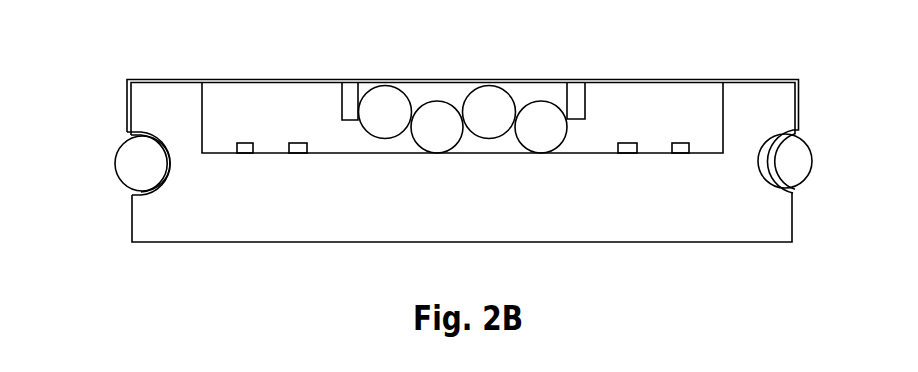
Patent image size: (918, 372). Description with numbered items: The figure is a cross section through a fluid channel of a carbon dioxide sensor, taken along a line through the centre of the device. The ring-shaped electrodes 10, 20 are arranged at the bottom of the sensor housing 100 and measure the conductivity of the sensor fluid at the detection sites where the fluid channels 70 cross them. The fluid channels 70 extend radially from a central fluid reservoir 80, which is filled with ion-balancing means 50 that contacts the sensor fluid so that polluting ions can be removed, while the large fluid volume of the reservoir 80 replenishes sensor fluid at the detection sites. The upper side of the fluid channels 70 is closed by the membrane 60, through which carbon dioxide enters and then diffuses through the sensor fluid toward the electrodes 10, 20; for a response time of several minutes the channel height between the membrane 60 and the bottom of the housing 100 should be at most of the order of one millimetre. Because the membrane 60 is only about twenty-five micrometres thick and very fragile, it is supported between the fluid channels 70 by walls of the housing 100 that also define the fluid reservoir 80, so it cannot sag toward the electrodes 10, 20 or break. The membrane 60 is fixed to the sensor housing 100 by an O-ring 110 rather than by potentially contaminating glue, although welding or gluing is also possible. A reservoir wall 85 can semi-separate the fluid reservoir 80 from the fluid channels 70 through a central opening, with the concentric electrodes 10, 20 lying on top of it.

The electrode 10 is at (297, 153).
The electrode 20 is at (245, 153).
The ion-balancing means 50 is at (482, 100).
The membrane 60 is at (447, 82).
The fluid channel 70 is at (710, 138).
The fluid reservoir 80 is at (418, 98).
The reservoir wall 85 is at (348, 101).
The sensor housing 100 is at (732, 195).
The O-ring 110 is at (133, 167).